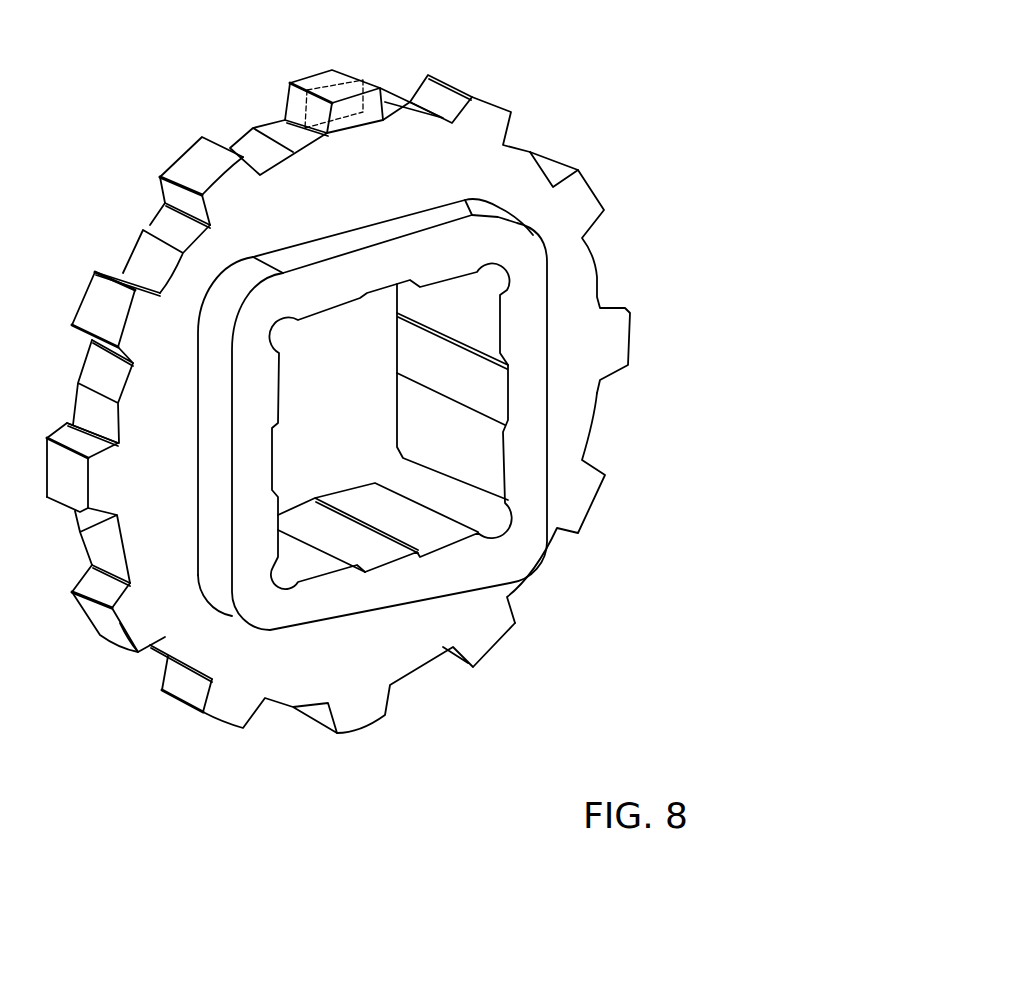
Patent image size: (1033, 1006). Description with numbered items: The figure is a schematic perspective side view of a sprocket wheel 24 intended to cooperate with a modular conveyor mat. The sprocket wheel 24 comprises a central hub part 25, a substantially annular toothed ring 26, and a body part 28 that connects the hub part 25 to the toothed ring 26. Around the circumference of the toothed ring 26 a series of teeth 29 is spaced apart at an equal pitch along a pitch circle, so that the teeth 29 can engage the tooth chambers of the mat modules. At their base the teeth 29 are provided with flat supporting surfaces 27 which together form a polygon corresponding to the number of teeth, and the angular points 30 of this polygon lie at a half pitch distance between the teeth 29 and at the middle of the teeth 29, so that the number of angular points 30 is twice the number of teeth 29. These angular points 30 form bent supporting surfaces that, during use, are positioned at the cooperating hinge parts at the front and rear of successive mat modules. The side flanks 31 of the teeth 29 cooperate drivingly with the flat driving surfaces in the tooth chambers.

The sprocket wheel 24 is at (603, 83).
The hub part 25 is at (488, 390).
The toothed ring 26 is at (233, 200).
The flat supporting surfaces 27 is at (278, 133).
The body part 28 is at (420, 165).
The teeth 29 is at (488, 118).
The angular points 30 is at (345, 100).
The side flanks 31 is at (445, 100).